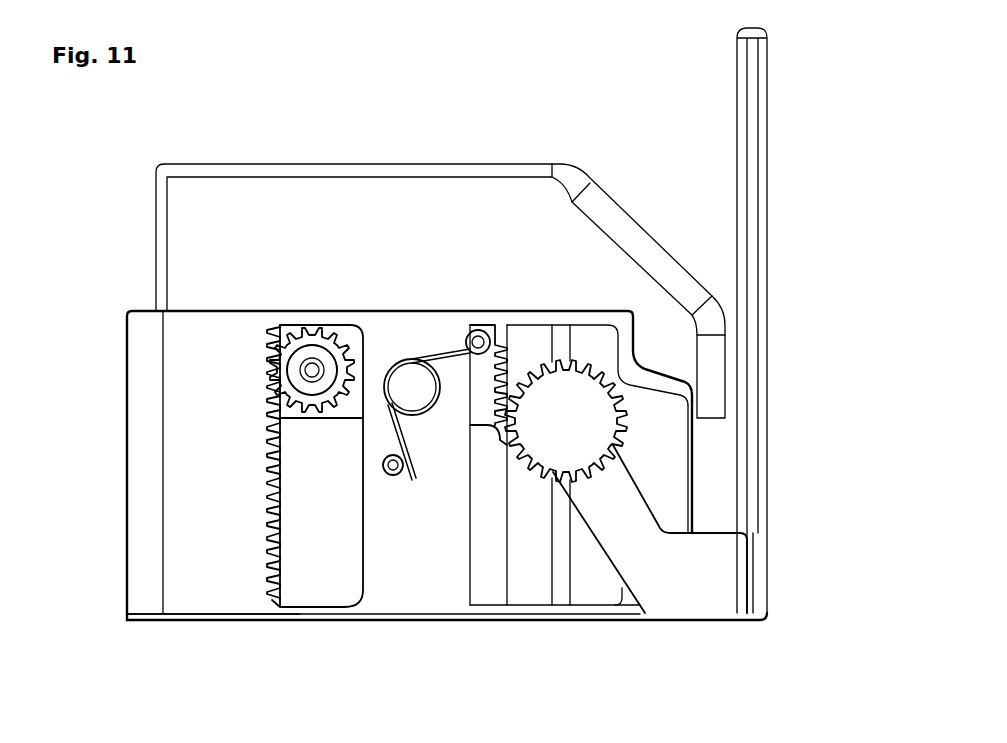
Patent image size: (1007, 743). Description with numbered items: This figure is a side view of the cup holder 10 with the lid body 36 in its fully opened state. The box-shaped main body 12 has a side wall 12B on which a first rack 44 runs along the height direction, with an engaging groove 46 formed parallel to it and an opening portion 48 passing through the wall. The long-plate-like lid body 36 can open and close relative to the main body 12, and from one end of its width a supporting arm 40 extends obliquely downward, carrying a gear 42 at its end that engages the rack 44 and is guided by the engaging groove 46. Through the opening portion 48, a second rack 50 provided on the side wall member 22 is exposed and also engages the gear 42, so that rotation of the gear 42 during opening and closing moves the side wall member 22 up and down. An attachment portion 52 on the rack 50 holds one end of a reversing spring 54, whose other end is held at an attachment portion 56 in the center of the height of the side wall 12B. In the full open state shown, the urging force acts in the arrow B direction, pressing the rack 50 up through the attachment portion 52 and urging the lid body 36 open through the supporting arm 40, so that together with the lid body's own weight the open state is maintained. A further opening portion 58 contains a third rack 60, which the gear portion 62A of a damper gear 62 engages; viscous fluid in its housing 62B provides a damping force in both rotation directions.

The cup holder 10 is at (830, 89).
The main body 12 is at (242, 631).
The side wall 12B is at (185, 608).
The side wall member 22 is at (367, 190).
The lid body 36 is at (756, 210).
The supporting arm 40 is at (620, 548).
The gear 42 is at (573, 426).
The rack 44 is at (612, 378).
The engaging groove 46 is at (562, 594).
The opening portion 48 is at (490, 592).
The rack 50 is at (470, 433).
The attachment portion 52 is at (485, 337).
The reversing spring 54 is at (400, 352).
The attachment portion 56 is at (393, 477).
The opening portion 58 is at (340, 595).
The rack 60 is at (275, 515).
The damper gear 62 is at (62, 335).
The gear portion 62A is at (268, 380).
The housing 62B is at (268, 331).
The arrow B direction B is at (463, 383).